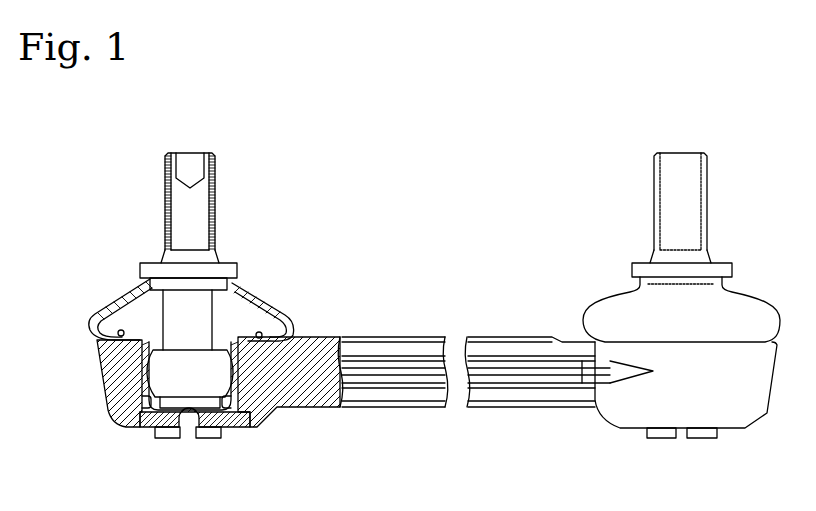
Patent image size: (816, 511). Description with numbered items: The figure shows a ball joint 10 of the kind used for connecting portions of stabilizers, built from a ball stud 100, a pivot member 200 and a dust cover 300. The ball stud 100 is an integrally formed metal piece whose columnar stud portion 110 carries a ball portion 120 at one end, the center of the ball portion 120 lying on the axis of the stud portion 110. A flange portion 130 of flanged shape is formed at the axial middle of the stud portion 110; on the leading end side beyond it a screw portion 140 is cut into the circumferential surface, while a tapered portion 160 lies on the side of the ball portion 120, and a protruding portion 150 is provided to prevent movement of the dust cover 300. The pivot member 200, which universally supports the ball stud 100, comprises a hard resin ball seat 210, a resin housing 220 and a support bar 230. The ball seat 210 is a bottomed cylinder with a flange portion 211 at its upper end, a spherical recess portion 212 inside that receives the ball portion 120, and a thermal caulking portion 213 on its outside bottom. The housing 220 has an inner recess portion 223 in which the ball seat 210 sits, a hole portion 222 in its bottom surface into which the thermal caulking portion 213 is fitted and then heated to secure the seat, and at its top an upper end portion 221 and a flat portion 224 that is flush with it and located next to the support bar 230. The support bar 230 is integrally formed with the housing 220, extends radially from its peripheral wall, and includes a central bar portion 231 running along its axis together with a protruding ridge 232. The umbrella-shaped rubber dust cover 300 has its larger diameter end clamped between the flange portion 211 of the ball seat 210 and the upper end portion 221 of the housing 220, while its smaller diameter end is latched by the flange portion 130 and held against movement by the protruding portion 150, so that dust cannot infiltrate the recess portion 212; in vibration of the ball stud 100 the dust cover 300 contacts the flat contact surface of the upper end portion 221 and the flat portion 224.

The ball joint 10 is at (386, 228).
The ball stud 100 is at (170, 280).
The stud portion 110 is at (176, 191).
The ball portion 120 is at (163, 374).
The flange portion 130 is at (236, 270).
The screw portion 140 is at (215, 170).
The protruding portion 150 is at (245, 296).
The tapered portion 160 is at (276, 316).
The pivot member 200 is at (201, 386).
The ball seat 210 is at (252, 416).
The flange portion 211 is at (102, 318).
The recess portion 212 is at (145, 430).
The thermal caulking portion 213 is at (160, 440).
The housing 220 is at (112, 400).
The upper end portion 221 is at (95, 344).
The hole portion 222 is at (146, 434).
The recess portion 223 is at (141, 404).
The flat portion 224 is at (335, 340).
The support bar 230 is at (495, 366).
The bar portion 231 is at (393, 356).
The protruding ridge 232 is at (415, 376).
The dust cover 300 is at (200, 292).